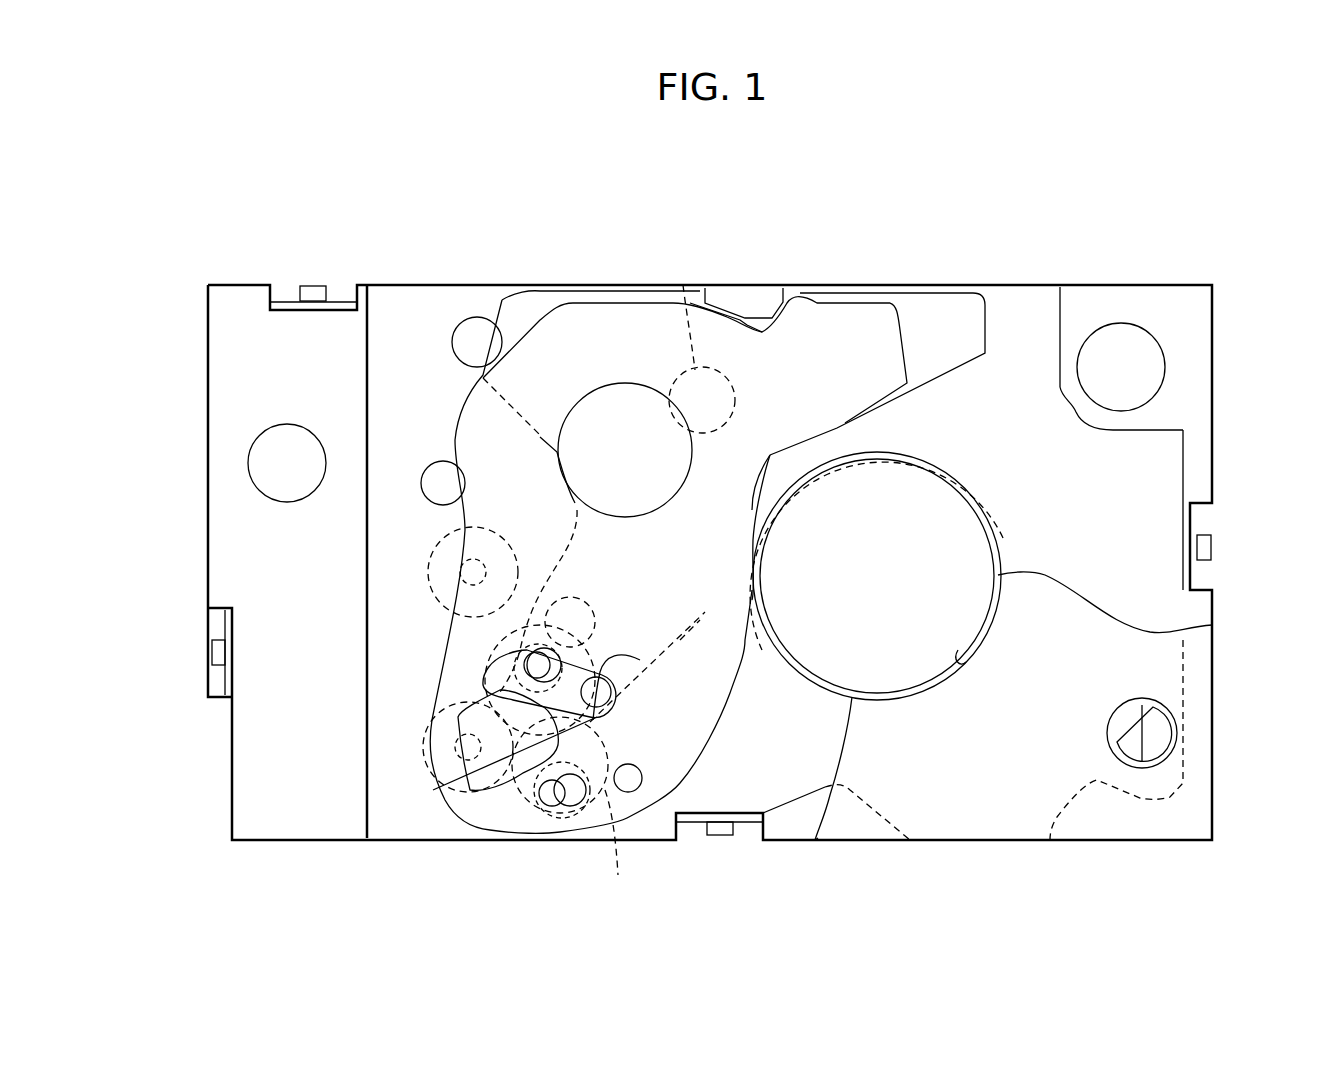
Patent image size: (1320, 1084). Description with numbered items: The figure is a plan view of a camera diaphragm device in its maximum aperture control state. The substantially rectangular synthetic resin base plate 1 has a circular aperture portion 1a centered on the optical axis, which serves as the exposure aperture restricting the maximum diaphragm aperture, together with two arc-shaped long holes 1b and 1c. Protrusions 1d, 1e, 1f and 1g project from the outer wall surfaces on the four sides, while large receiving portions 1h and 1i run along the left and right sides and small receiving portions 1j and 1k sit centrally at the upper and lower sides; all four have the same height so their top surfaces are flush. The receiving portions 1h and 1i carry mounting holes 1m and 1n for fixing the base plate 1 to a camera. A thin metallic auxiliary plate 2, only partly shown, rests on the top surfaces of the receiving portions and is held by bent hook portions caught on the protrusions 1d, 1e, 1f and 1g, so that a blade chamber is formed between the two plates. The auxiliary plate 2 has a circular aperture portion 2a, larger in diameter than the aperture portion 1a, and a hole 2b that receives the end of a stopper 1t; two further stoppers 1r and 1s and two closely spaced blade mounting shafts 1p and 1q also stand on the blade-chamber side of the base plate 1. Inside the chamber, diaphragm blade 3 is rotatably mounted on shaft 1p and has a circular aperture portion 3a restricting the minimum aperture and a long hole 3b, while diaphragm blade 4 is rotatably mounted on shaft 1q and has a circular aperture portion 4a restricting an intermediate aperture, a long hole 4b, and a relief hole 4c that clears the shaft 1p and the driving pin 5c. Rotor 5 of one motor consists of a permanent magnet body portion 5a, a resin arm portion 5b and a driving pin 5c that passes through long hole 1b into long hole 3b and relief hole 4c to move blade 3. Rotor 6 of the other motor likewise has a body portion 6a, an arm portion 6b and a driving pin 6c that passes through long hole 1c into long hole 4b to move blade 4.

The base plate 1 is at (398, 270).
The circular aperture portion 1a is at (958, 500).
The arc-shaped long hole 1b is at (548, 650).
The arc-shaped long hole 1c is at (619, 849).
The protrusion 1d is at (215, 650).
The protrusion 1e is at (312, 285).
The protrusion 1f is at (1207, 546).
The protrusion 1g is at (724, 832).
The large receiving portion 1h is at (267, 807).
The large receiving portion 1i is at (1198, 462).
The small receiving portion 1j is at (760, 300).
The small receiving portion 1k is at (805, 828).
The mounting hole 1m is at (262, 445).
The mounting hole 1n is at (1112, 322).
The blade mounting shaft 1p is at (640, 660).
The blade mounting shaft 1q is at (632, 775).
The stopper 1r is at (478, 322).
The stopper 1s is at (437, 470).
The stopper 1t is at (1158, 735).
The auxiliary plate 2 is at (987, 828).
The circular aperture portion 2a is at (958, 652).
The hole 2b is at (1145, 703).
The diaphragm blade 3 is at (930, 315).
The circular aperture portion 3a is at (684, 285).
The long hole 3b is at (590, 680).
The diaphragm blade 4 is at (838, 320).
The circular aperture portion 4a is at (594, 392).
The long hole 4b is at (548, 800).
The relief hole 4c is at (470, 700).
The rotor 5 is at (420, 572).
The body portion 5a is at (440, 548).
The arm portion 5b is at (490, 620).
The driving pin 5c is at (428, 737).
The rotor 6 is at (415, 752).
The body portion 6a is at (423, 740).
The arm portion 6b is at (525, 785).
The driving pin 6c is at (570, 795).